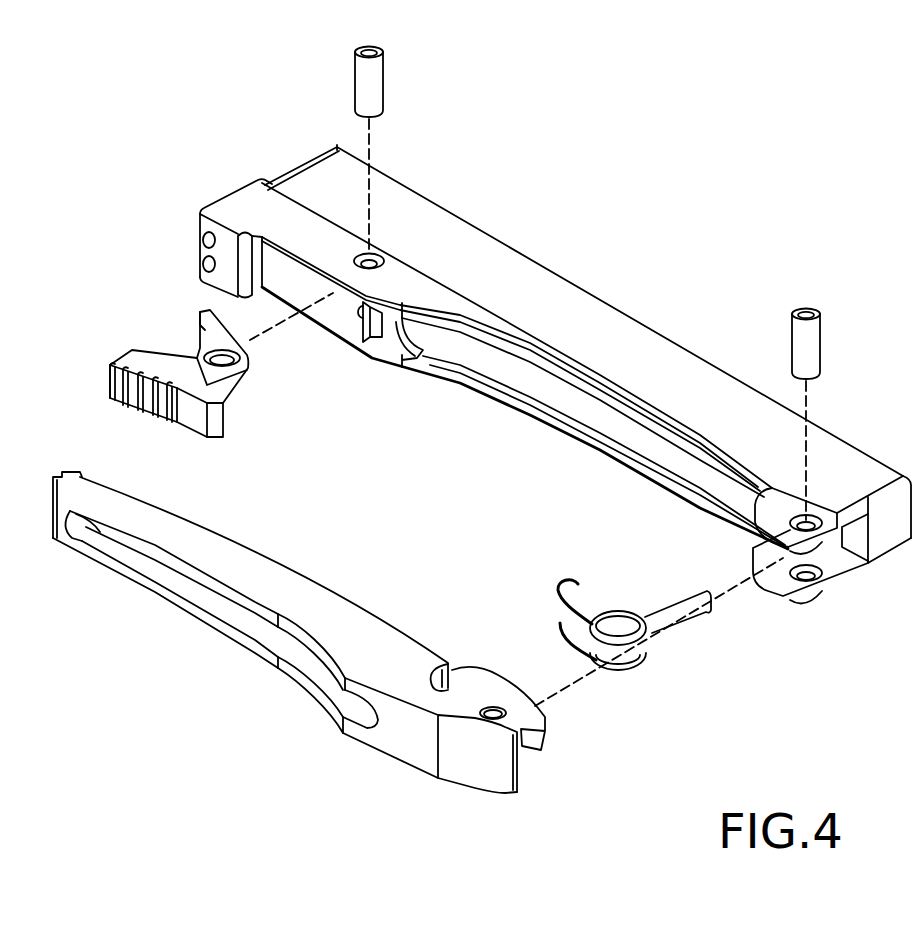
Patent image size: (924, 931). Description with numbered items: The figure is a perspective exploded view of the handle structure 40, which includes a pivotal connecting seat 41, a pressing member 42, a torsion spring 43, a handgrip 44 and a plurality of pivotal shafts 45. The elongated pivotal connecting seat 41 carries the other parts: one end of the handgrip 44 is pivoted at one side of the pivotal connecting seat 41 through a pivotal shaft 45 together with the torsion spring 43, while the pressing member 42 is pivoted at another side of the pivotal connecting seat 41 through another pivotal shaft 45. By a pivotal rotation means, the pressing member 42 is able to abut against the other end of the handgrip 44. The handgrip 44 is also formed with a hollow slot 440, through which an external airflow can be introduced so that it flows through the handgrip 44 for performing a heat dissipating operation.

The handle structure 40 is at (628, 156).
The pivotal connecting seat 41 is at (243, 213).
The pressing member 42 is at (155, 362).
The torsion spring 43 is at (680, 632).
The handgrip 44 is at (258, 572).
The hollow slot 440 is at (175, 586).
The pivotal shaft 45 is at (802, 338).